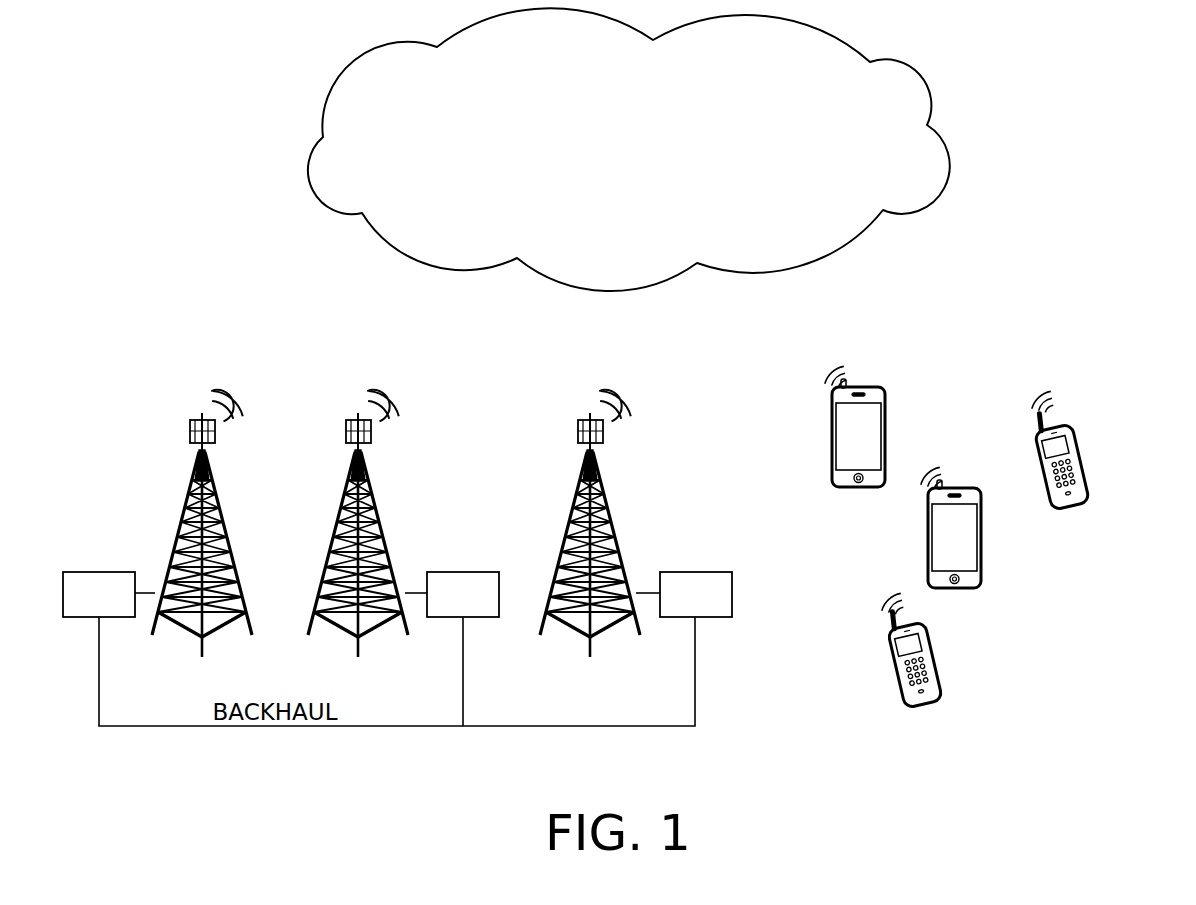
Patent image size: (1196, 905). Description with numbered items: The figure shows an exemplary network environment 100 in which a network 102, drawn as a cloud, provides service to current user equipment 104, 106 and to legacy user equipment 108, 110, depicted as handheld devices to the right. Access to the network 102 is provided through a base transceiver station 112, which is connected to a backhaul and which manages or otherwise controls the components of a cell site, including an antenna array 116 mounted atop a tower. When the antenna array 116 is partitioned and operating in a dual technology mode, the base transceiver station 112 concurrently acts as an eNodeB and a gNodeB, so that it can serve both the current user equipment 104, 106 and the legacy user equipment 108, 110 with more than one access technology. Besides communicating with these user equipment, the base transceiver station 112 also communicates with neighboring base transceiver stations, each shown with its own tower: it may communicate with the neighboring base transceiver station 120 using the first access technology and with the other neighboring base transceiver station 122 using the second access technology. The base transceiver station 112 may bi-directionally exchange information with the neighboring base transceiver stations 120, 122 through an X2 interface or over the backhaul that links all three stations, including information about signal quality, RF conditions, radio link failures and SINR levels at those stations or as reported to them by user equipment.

The network environment 100 is at (85, 107).
The network 102 is at (607, 163).
The current user equipment 104 is at (885, 432).
The current user equipment 106 is at (981, 537).
The legacy user equipment 108 is at (937, 659).
The legacy user equipment 110 is at (1086, 472).
The base transceiver station 112 is at (695, 572).
The antenna array 116 is at (606, 431).
The neighboring base transceiver station 120 is at (463, 572).
The neighboring base transceiver station 122 is at (99, 572).